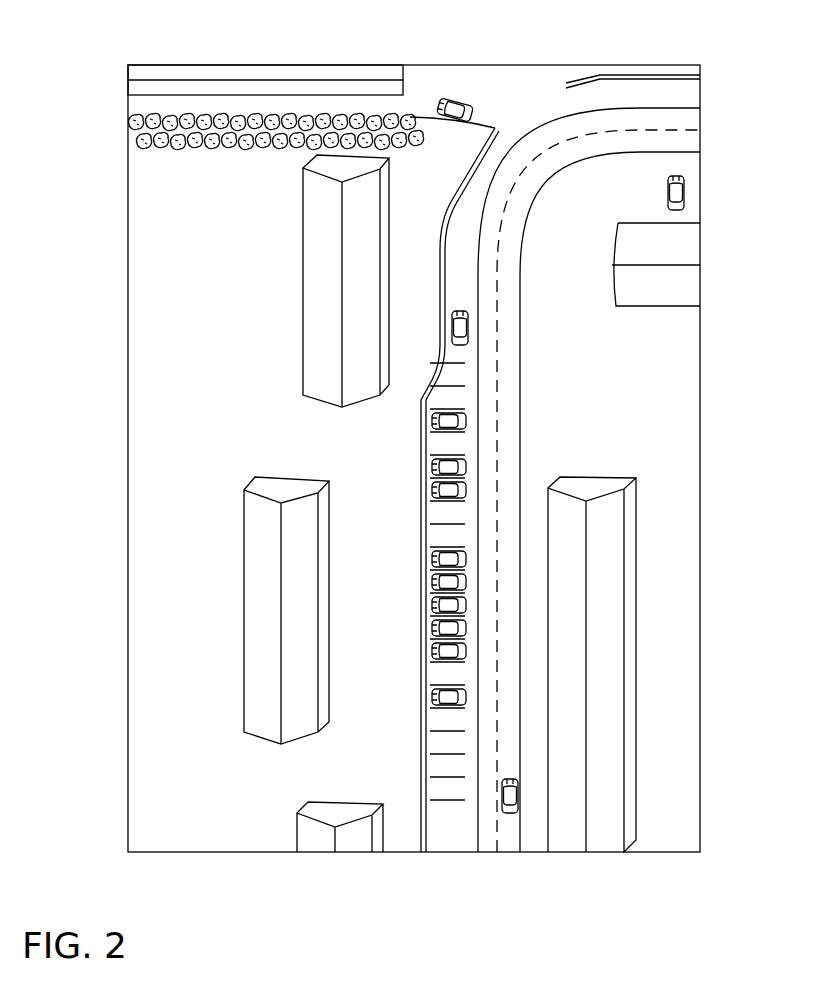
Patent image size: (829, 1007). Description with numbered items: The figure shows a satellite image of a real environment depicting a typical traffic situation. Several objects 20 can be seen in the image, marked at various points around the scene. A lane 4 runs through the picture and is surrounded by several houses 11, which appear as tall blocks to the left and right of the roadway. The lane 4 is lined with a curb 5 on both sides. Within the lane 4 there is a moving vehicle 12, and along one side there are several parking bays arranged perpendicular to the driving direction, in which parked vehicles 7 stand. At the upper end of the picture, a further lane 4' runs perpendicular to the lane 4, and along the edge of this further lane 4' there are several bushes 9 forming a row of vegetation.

The lane 4 is at (619, 480).
The further lane 4' is at (265, 57).
The curb 5 is at (479, 143).
The parked vehicles 7 is at (456, 420).
The bushes 9 is at (163, 120).
The houses 11 is at (320, 267).
The moving vehicle 12 is at (510, 812).
The objects 20 is at (197, 118).